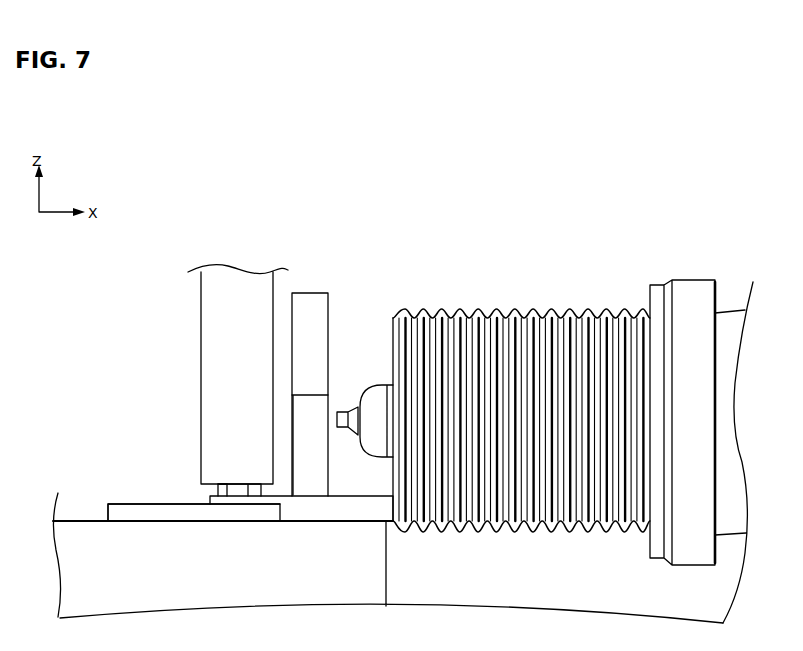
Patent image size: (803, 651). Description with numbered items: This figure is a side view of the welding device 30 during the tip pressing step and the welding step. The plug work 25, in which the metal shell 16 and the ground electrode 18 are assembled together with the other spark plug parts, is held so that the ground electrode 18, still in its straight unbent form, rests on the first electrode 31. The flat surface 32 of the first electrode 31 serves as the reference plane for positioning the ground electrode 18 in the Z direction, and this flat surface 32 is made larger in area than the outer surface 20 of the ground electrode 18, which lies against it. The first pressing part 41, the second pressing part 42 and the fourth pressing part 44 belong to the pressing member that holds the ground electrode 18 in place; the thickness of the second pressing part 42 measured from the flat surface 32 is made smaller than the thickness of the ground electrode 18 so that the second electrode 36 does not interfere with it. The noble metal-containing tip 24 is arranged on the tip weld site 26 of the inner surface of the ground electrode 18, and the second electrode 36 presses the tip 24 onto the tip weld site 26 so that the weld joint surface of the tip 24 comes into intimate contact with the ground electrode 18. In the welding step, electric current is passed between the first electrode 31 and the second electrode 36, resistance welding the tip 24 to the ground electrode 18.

The metal shell 16 is at (693, 293).
The ground electrode 18 is at (307, 513).
The outer surface 20 is at (260, 522).
The tip 24 is at (238, 490).
The plug work 25 is at (735, 255).
The tip weld site 26 is at (217, 483).
The welding device 30 is at (376, 240).
The first electrode 31 is at (376, 568).
The flat surface 32 is at (138, 513).
The second electrode 36 is at (215, 310).
The first pressing part 41 is at (324, 407).
The second pressing part 42 is at (166, 512).
The fourth pressing part 44 is at (312, 303).